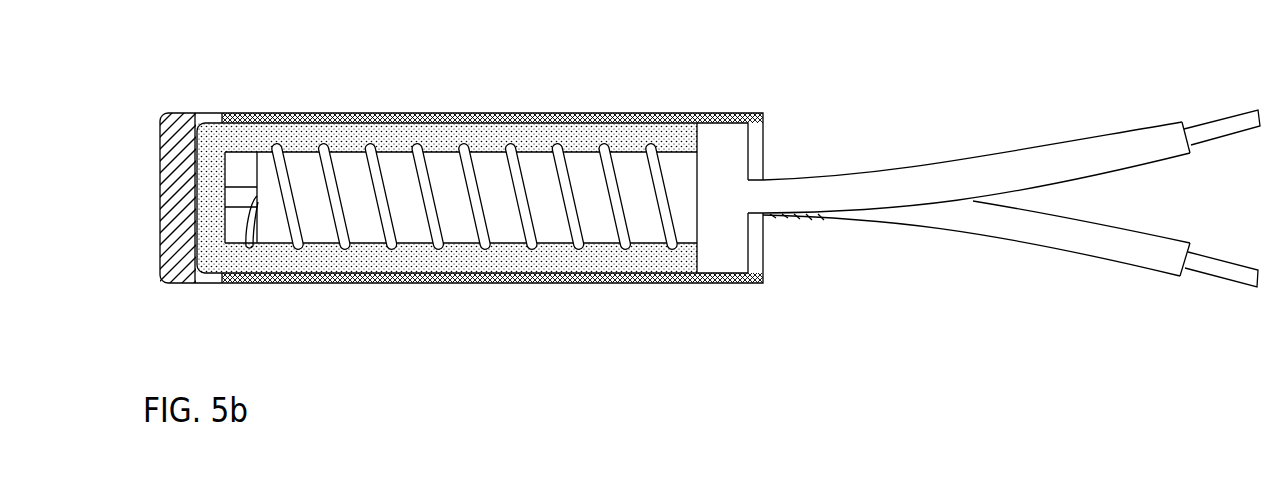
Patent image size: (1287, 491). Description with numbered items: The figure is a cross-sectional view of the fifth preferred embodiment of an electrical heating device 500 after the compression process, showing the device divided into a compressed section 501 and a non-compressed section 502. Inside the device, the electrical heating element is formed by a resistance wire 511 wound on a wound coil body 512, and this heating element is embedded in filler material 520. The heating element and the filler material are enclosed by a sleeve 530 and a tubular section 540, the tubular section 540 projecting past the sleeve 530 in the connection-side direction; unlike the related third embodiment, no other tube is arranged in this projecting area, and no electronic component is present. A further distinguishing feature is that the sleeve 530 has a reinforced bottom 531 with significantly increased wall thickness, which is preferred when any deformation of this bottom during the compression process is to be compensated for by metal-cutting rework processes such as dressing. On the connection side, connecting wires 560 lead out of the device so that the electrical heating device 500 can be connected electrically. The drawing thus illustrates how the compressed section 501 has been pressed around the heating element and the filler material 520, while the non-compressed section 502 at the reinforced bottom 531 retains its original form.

The electrical heating device 500 is at (654, 289).
The compressed section 501 is at (760, 112).
The non-compressed section 502 is at (222, 110).
The resistance wire 511 is at (687, 282).
The wound coil body 512 is at (453, 227).
The filler material 520 is at (563, 276).
The sleeve 530 is at (212, 282).
The reinforced bottom 531 is at (177, 192).
The tubular section 540 is at (285, 283).
The connecting wires 560 is at (803, 190).